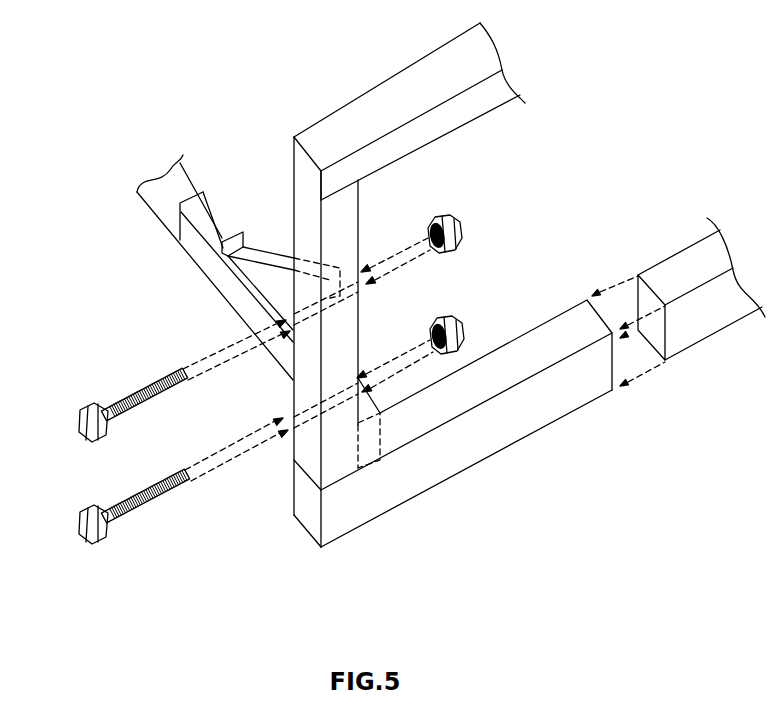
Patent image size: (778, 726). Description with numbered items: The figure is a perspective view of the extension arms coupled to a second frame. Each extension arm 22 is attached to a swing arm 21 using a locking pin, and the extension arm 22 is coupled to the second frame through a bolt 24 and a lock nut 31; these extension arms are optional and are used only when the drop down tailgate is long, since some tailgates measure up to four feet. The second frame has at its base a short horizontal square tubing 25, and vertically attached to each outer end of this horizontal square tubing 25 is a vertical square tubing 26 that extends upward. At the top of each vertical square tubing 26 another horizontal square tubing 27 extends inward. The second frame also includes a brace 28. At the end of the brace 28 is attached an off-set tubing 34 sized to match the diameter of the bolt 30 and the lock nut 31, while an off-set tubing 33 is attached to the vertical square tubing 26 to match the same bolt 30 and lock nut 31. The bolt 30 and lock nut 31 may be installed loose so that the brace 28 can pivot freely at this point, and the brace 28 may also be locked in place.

The swing arm 21 is at (163, 203).
The extension arm 22 is at (207, 265).
The bolt 24 is at (80, 531).
The horizontal square tubing 25 is at (578, 383).
The vertical square tubing 26 is at (345, 212).
The horizontal square tubing 27 is at (432, 85).
The brace 28 is at (272, 257).
The bolt 30 is at (80, 428).
The lock nut 31 is at (460, 227).
The off-set tubing 33 is at (230, 460).
The off-set tubing 34 is at (413, 420).